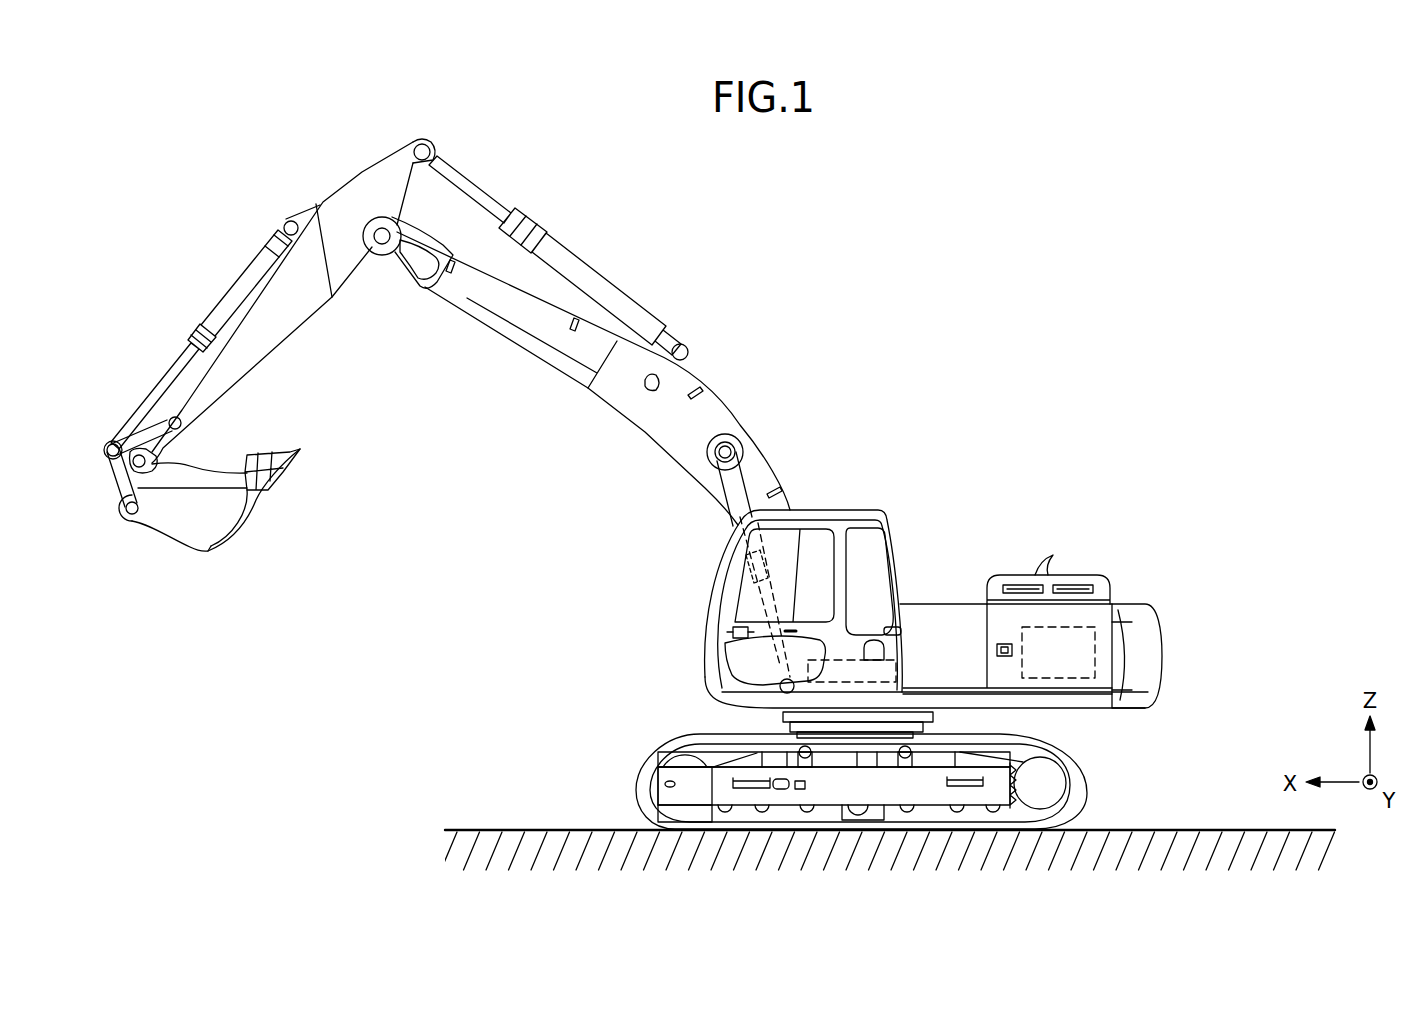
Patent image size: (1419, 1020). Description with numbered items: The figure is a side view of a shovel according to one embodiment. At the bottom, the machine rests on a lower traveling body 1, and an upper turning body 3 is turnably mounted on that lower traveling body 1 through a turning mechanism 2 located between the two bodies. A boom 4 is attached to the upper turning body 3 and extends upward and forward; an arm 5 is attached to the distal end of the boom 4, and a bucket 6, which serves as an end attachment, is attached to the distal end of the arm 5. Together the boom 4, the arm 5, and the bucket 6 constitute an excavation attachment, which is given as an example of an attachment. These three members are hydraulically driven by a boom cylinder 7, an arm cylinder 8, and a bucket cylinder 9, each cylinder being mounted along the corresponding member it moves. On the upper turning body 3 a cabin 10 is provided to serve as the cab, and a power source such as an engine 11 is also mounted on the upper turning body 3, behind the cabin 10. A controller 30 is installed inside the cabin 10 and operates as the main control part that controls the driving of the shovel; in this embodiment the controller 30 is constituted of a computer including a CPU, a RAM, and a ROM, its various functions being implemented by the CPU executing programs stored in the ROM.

The lower traveling body 1 is at (633, 783).
The turning mechanism 2 is at (930, 731).
The upper turning body 3 is at (948, 603).
The boom 4 is at (627, 403).
The arm 5 is at (298, 313).
The bucket 6 is at (199, 545).
The boom cylinder 7 is at (735, 490).
The arm cylinder 8 is at (598, 287).
The bucket cylinder 9 is at (237, 298).
The cabin 10 is at (880, 508).
The engine 11 is at (1090, 627).
The controller 30 is at (808, 660).